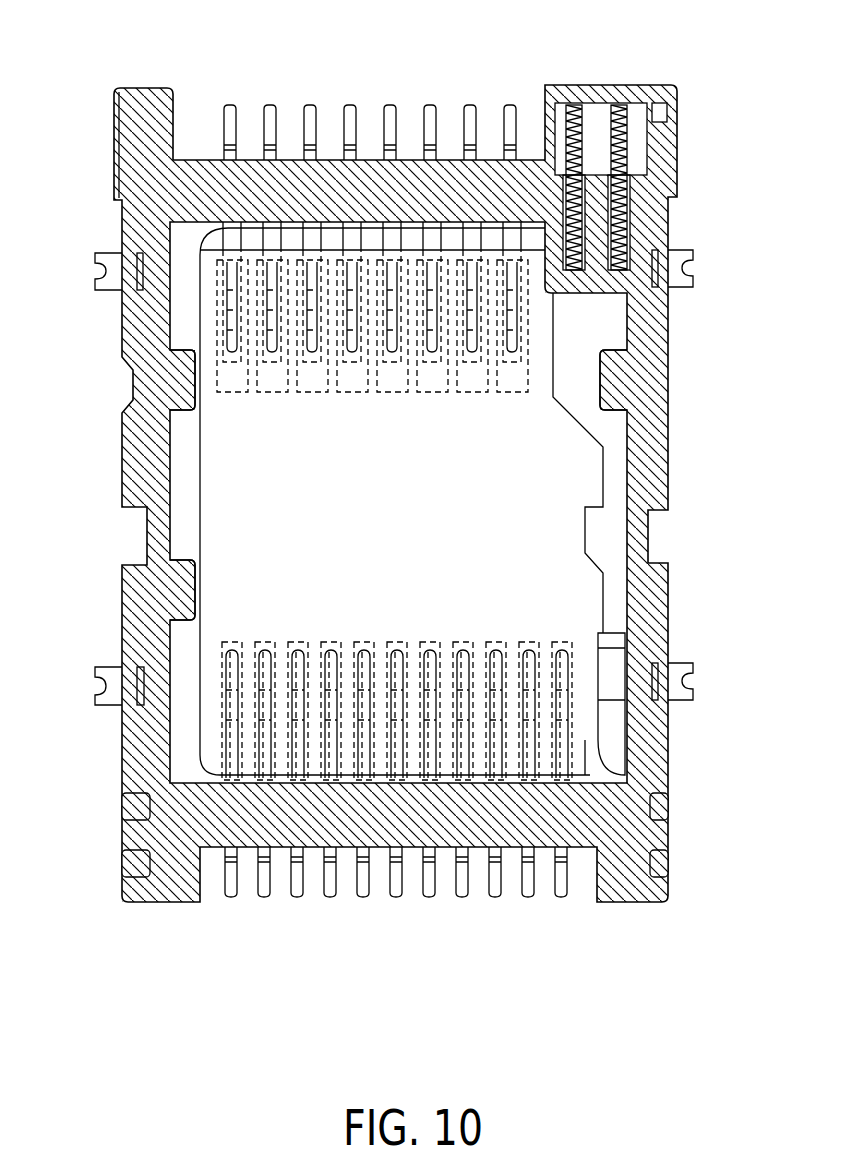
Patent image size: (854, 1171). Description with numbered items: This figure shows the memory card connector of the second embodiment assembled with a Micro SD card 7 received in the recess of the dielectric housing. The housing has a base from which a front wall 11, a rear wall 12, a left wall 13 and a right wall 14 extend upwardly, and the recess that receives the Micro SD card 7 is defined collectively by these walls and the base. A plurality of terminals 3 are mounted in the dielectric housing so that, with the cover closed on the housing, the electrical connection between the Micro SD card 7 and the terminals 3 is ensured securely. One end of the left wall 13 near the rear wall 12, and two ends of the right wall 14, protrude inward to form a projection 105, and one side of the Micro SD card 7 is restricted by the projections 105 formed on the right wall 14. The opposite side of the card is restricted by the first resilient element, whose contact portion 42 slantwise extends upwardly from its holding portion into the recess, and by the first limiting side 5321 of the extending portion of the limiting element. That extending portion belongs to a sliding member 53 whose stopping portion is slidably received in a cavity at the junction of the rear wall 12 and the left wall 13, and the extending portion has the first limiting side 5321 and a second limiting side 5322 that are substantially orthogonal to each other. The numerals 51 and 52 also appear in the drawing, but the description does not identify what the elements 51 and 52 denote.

The terminals 3 is at (229, 142).
The rear wall 12 is at (433, 178).
The spring seat block 51 is at (603, 86).
The spring 52 is at (670, 218).
The first limiting side 5321 is at (637, 238).
The sliding member 53 is at (672, 280).
The second limiting side 5322 is at (592, 297).
The projection 105 is at (152, 380).
The right wall 14 is at (128, 470).
The Micro SD card 7 is at (578, 518).
The left wall 13 is at (650, 598).
The contact portion 42 is at (612, 682).
The front wall 11 is at (292, 830).